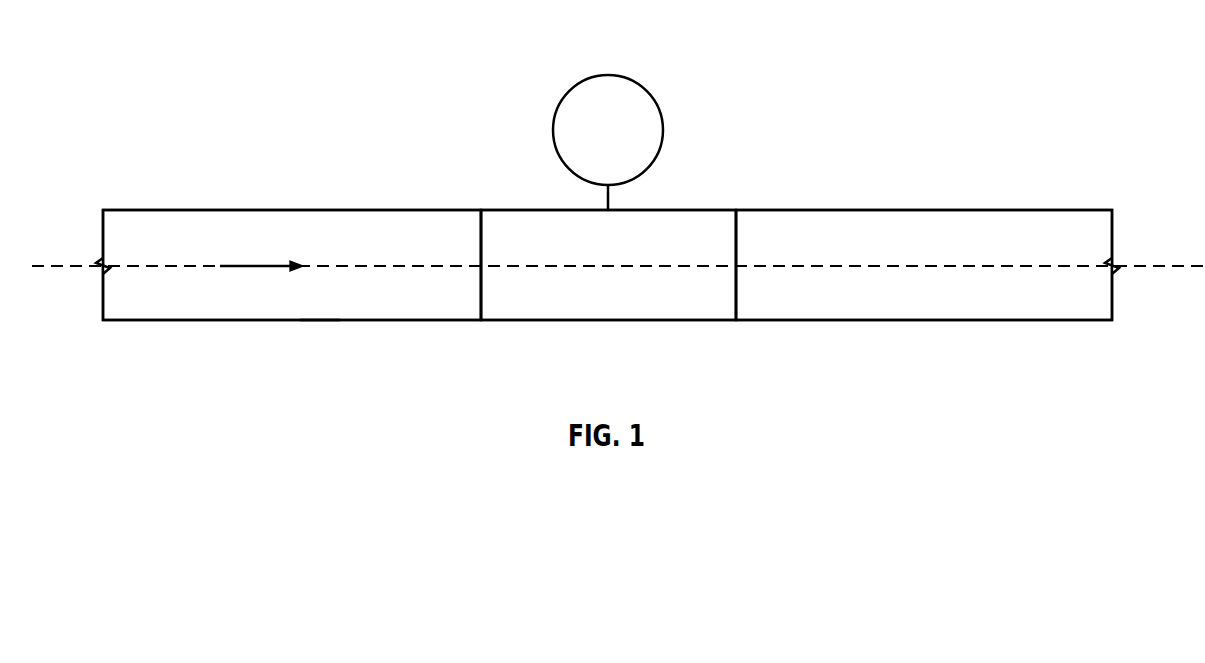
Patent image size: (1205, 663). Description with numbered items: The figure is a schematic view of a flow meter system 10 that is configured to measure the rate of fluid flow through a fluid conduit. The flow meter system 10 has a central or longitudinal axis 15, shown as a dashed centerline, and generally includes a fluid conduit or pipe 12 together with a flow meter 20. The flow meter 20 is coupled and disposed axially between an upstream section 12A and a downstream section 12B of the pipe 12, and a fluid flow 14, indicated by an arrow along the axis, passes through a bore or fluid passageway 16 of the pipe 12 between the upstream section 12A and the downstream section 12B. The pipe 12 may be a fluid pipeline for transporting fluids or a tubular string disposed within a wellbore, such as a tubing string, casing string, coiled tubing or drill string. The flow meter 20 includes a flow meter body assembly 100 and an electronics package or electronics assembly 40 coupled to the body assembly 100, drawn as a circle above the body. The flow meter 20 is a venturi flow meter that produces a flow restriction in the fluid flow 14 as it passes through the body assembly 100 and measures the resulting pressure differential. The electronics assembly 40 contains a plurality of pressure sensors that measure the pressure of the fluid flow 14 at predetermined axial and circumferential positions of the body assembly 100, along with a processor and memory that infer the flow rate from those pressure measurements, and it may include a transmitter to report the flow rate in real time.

The flow meter system 10 is at (128, 104).
The pipe 12 is at (180, 210).
The upstream section 12A is at (182, 322).
The downstream section 12B is at (942, 322).
The fluid flow 14 is at (265, 263).
The longitudinal axis 15 is at (1164, 263).
The fluid passageway 16 is at (310, 303).
The flow meter 20 is at (510, 210).
The electronics assembly 40 is at (645, 87).
The flow meter body assembly 100 is at (513, 303).